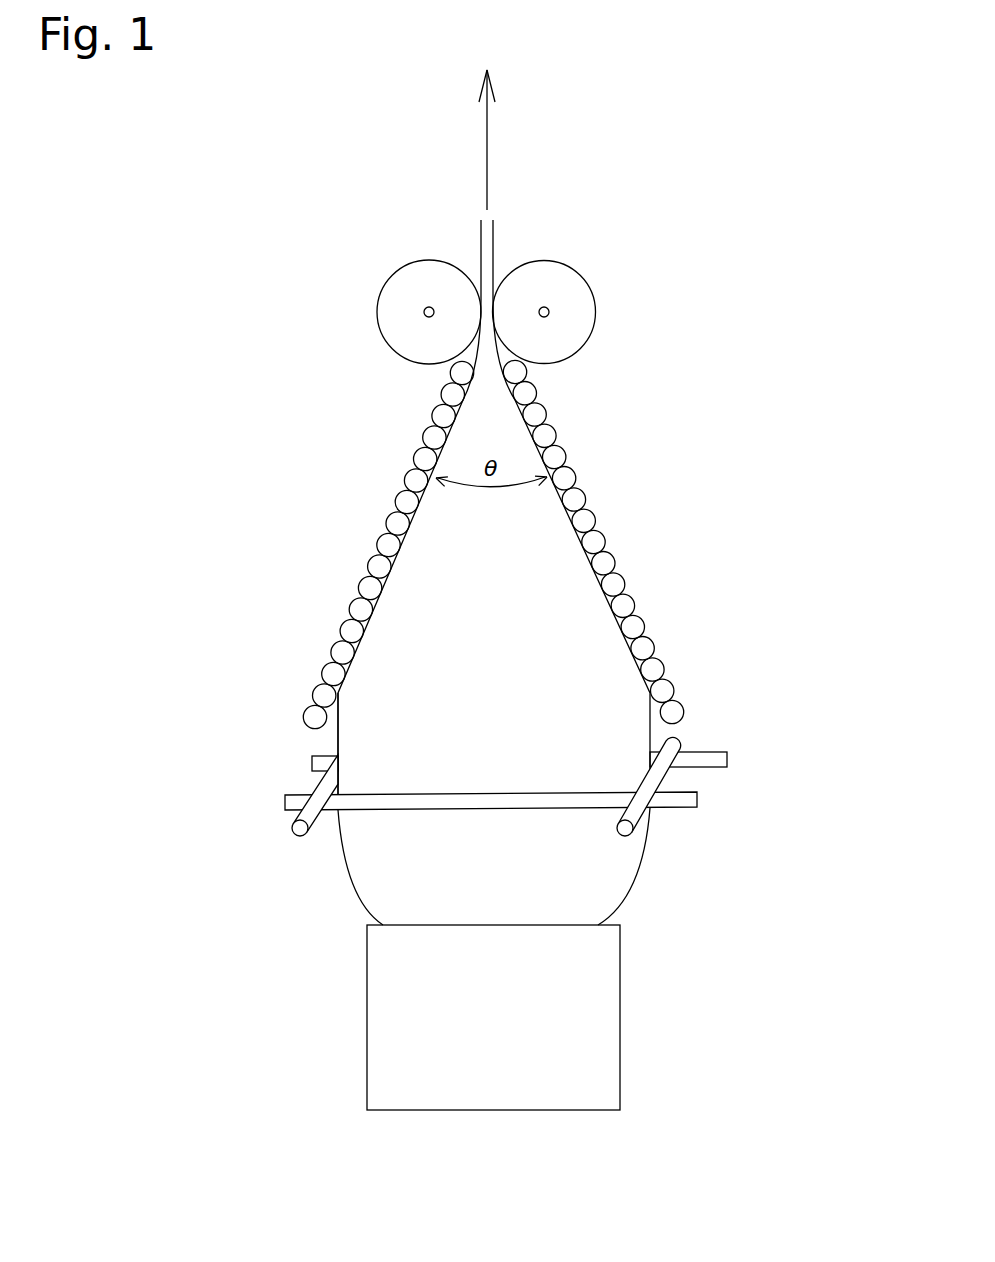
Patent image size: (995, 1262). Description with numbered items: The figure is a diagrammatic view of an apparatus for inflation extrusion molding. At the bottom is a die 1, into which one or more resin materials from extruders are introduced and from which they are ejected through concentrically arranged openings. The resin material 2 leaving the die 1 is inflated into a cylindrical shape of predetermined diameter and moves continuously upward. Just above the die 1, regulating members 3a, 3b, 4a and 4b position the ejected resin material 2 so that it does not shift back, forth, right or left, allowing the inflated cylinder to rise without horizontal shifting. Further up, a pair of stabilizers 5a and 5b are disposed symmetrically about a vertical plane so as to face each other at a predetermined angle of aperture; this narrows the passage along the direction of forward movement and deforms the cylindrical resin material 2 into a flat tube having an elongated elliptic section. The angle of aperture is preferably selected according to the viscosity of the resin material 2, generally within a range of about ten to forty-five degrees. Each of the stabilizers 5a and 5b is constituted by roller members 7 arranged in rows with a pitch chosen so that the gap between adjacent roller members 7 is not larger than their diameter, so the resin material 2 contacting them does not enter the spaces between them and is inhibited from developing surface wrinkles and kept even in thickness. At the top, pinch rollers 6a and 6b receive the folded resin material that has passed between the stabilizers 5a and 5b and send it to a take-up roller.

The die 1 is at (587, 1008).
The resin material 2 is at (582, 850).
The regulating member 3a is at (688, 797).
The regulating member 3b is at (717, 760).
The regulating member 4a is at (292, 828).
The regulating member 4b is at (677, 738).
The stabilizer 5a is at (343, 483).
The stabilizer 5b is at (622, 472).
The pinch roller 6a is at (393, 290).
The pinch roller 6b is at (570, 288).
The roller member 7 is at (617, 580).